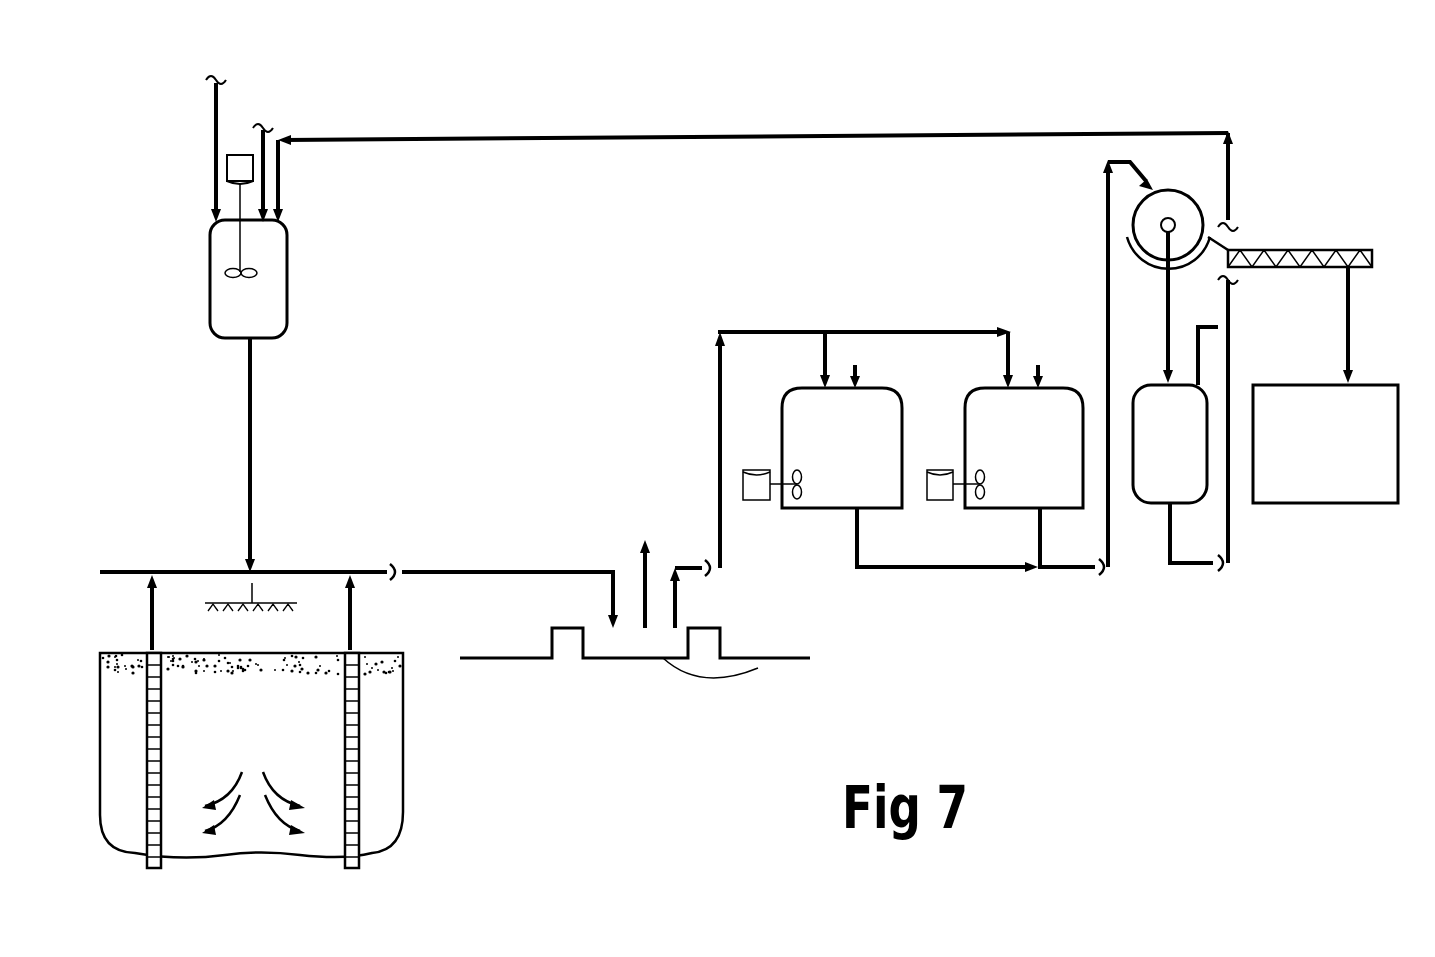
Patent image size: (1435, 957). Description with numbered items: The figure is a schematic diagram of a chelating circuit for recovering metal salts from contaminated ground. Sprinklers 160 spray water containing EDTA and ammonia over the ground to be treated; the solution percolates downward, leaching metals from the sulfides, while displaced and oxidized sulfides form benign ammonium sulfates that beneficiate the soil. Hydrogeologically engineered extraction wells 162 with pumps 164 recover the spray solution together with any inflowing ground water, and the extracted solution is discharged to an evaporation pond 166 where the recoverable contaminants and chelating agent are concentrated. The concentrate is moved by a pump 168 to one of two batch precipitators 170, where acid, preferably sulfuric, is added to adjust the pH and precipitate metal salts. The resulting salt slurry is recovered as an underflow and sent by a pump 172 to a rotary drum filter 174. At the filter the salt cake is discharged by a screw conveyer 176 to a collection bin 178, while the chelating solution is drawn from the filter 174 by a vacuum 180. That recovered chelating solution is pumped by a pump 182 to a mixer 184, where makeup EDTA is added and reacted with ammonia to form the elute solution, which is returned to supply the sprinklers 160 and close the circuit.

The sprinklers 160 is at (251, 612).
The extraction wells 162 is at (352, 800).
The pumps 164 is at (359, 596).
The evaporation pond 166 is at (636, 628).
The pump 168 is at (697, 480).
The batch precipitators 170 is at (902, 478).
The pump 172 is at (1077, 380).
The rotary drum filter 174 is at (1168, 406).
The screw conveyer 176 is at (1300, 307).
The collection bin 178 is at (1326, 458).
The vacuum 180 is at (1226, 422).
The pump 182 is at (1223, 544).
The mixer 184 is at (341, 311).